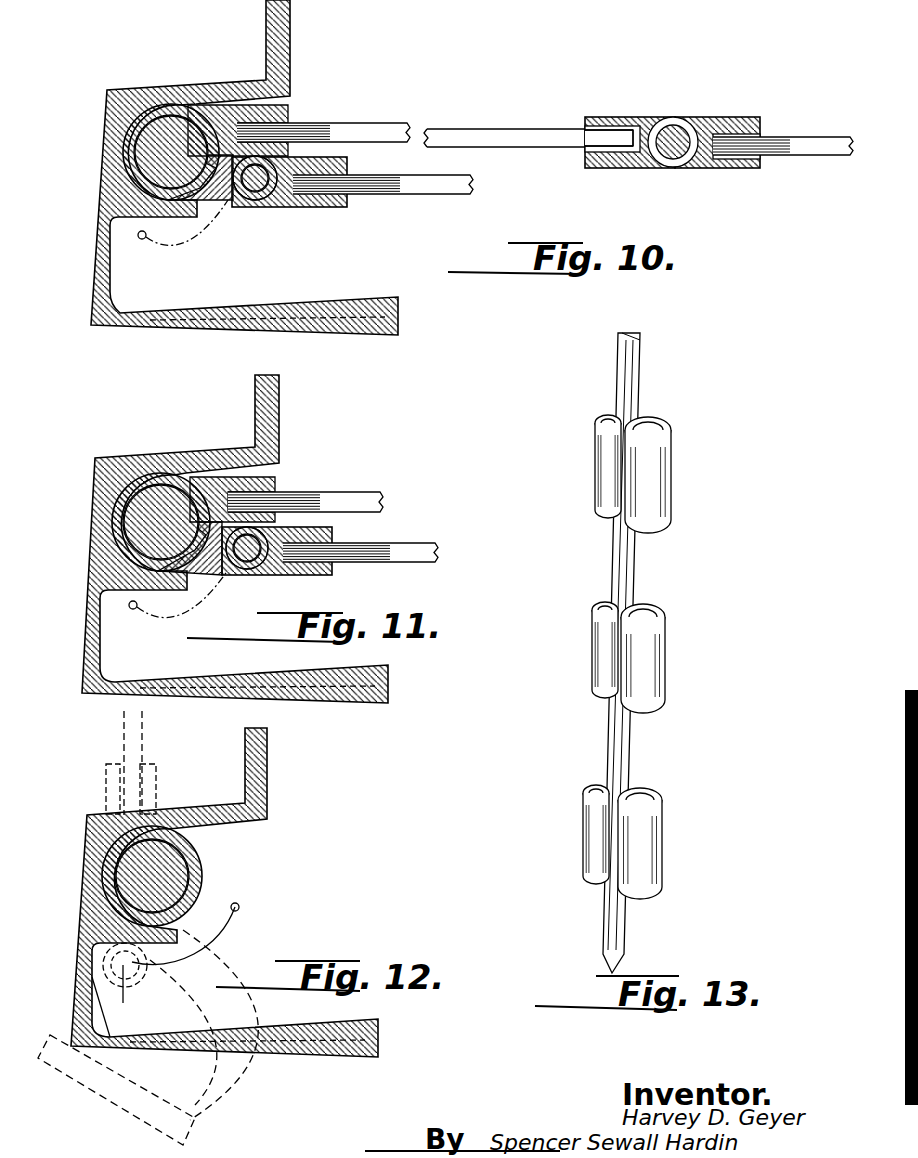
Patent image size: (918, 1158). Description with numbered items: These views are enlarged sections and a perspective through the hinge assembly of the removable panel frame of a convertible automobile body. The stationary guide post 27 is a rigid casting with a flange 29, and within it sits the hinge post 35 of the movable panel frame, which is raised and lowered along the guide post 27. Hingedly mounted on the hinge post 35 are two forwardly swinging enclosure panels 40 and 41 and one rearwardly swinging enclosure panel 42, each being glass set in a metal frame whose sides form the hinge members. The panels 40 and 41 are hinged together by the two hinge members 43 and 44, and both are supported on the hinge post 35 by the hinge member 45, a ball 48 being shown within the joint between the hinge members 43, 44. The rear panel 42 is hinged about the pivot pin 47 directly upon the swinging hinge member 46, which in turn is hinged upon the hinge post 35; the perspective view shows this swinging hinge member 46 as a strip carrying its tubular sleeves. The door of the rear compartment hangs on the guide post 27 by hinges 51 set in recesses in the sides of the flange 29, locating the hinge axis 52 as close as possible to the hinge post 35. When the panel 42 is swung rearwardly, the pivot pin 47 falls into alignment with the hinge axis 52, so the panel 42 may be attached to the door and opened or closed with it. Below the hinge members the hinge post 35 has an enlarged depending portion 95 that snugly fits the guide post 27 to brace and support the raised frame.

In FIG. 10, the stationary guide post 27 is at (125, 190).
In FIG. 11, the stationary guide post 27 is at (100, 570).
In FIG. 12, the stationary guide post 27 is at (90, 912).
In FIG. 10, the flange 29 is at (350, 326).
In FIG. 11, the flange 29 is at (387, 704).
In FIG. 12, the flange 29 is at (365, 1058).
In FIG. 10, the hinge post 35 is at (160, 150).
In FIG. 11, the hinge post 35 is at (140, 527).
In FIG. 12, the hinge post 35 is at (130, 878).
In FIG. 13, the hinge post 35 is at (672, 431).
In FIG. 10, the enclosure panel 40 is at (378, 130).
In FIG. 11, the enclosure panel 40 is at (330, 500).
In FIG. 12, the enclosure panel 40 is at (144, 738).
In FIG. 10, the enclosure panel 41 is at (790, 140).
In FIG. 10, the enclosure panel 42 is at (400, 186).
In FIG. 11, the enclosure panel 42 is at (385, 562).
In FIG. 10, the hinge member 43 is at (610, 118).
In FIG. 10, the hinge member 44 is at (713, 122).
In FIG. 10, the hinge member 45 is at (280, 113).
In FIG. 11, the hinge member 45 is at (208, 485).
In FIG. 12, the hinge member 45 is at (106, 796).
In FIG. 10, the swinging hinge member 46 is at (220, 192).
In FIG. 11, the swinging hinge member 46 is at (205, 560).
In FIG. 13, the swinging hinge member 46 is at (630, 558).
In FIG. 10, the pivot pin 47 is at (262, 186).
In FIG. 11, the pivot pin 47 is at (247, 552).
In FIG. 12, the pivot pin 47 is at (239, 907).
In FIG. 13, the pivot pin 47 is at (594, 425).
In FIG. 10, the ball 48 is at (683, 152).
In FIG. 12, the hinge 51 is at (144, 1099).
In FIG. 10, the hinge axis 52 is at (144, 239).
In FIG. 11, the hinge axis 52 is at (133, 609).
In FIG. 12, the hinge axis 52 is at (123, 1003).
In FIG. 12, the enlarged depending portion 95 is at (200, 874).